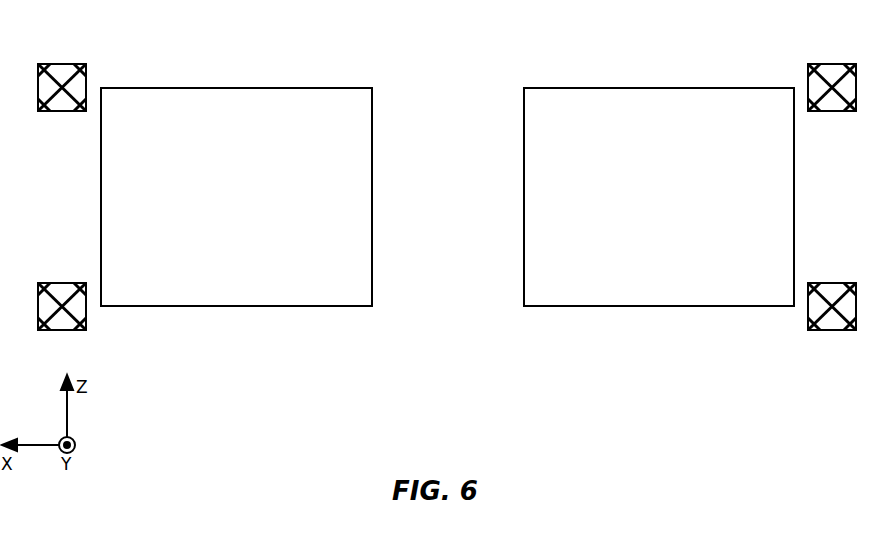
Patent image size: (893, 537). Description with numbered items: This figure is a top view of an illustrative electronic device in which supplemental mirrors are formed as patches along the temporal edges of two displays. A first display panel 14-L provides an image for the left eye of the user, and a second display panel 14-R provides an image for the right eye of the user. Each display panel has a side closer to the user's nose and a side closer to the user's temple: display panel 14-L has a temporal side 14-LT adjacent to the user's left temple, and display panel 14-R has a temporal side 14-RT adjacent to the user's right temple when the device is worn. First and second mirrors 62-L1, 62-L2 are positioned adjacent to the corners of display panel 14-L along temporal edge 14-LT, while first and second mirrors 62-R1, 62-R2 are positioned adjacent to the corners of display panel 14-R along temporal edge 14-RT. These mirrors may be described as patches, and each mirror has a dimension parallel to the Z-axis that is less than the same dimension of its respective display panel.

The first display panel 14-L is at (263, 88).
The second display panel 14-R is at (633, 88).
The temporal side of display 14-L 14-LT is at (103, 272).
The temporal side of display 14-R 14-RT is at (792, 272).
The first mirror 62-L1 is at (65, 63).
The second mirror 62-L2 is at (52, 282).
The first mirror 62-R1 is at (835, 63).
The second mirror 62-R2 is at (842, 282).